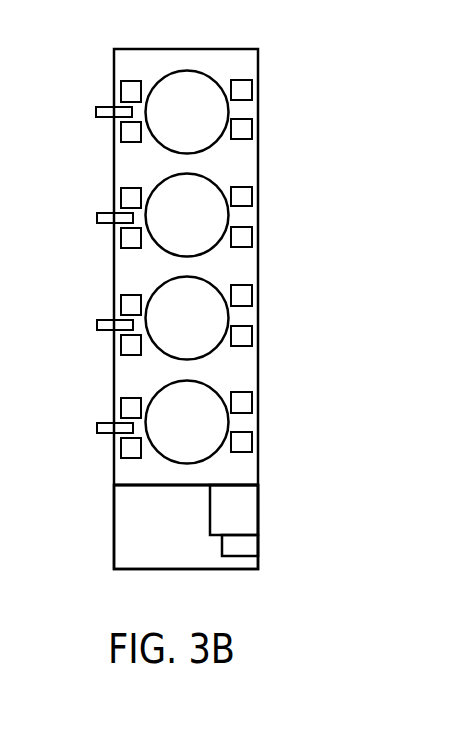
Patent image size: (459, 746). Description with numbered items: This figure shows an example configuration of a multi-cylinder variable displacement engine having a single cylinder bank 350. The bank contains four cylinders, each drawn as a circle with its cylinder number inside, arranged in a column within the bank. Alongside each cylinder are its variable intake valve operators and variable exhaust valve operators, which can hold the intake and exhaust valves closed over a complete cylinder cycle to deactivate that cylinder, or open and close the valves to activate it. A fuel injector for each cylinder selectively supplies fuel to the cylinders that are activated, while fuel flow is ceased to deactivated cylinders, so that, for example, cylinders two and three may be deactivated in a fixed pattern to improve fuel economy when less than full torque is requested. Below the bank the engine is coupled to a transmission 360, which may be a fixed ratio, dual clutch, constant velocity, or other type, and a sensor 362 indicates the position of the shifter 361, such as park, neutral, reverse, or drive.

The single cylinder bank 350 is at (248, 46).
The transmission 360 is at (186, 527).
The shifter 361 is at (234, 510).
The sensor 362 is at (247, 545).